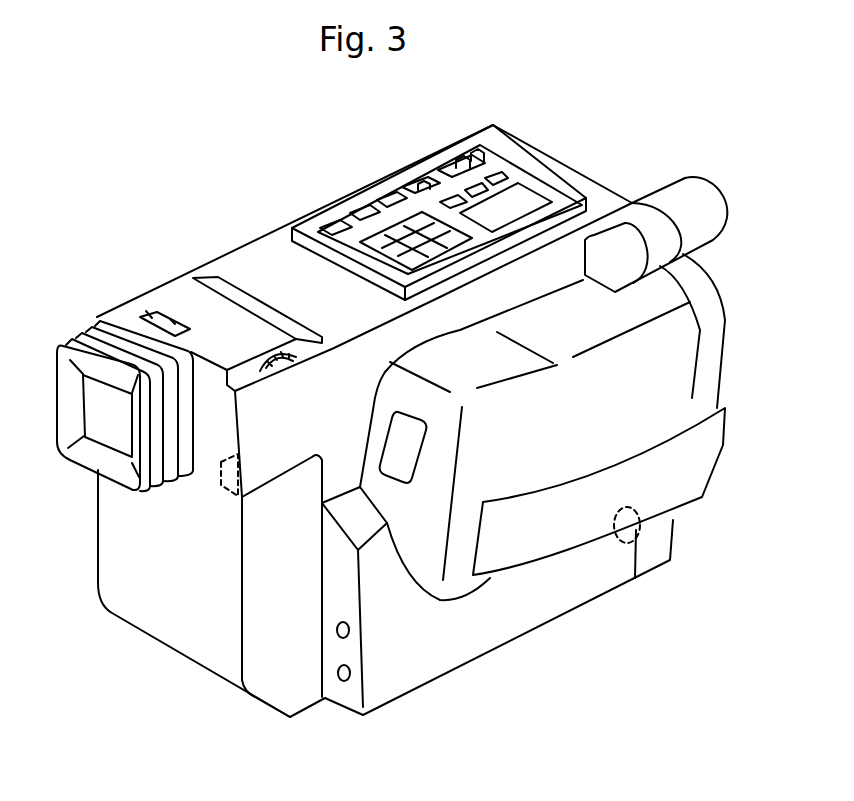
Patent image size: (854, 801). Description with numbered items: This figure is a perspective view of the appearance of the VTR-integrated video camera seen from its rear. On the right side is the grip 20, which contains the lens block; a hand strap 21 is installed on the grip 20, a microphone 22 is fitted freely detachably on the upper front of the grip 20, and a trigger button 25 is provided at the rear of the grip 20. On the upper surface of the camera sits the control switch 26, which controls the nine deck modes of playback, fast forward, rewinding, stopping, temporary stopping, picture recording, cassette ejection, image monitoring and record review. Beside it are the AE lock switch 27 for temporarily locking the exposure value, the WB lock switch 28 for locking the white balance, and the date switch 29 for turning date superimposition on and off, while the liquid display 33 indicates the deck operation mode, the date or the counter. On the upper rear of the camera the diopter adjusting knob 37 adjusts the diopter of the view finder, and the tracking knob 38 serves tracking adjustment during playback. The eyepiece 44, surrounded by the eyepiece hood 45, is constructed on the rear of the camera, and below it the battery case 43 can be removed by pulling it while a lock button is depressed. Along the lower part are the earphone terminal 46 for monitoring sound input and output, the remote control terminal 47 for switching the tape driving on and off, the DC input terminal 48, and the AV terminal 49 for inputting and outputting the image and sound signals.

The grip 20 is at (680, 360).
The hand strap 21 is at (537, 548).
The microphone 22 is at (681, 190).
The trigger button 25 is at (421, 480).
The control switch 26 is at (385, 258).
The AE lock switch 27 is at (389, 198).
The WB lock switch 28 is at (358, 215).
The date switch 29 is at (331, 228).
The liquid display 33 is at (528, 205).
The diopter adjusting knob 37 is at (148, 313).
The tracking knob 38 is at (283, 370).
The battery case 43 is at (153, 622).
The eyepiece 44 is at (95, 408).
The eyepiece hood 45 is at (93, 462).
The earphone terminal 46 is at (344, 681).
The remote control terminal 47 is at (352, 628).
The DC input terminal 48 is at (233, 490).
The AV terminal 49 is at (640, 522).